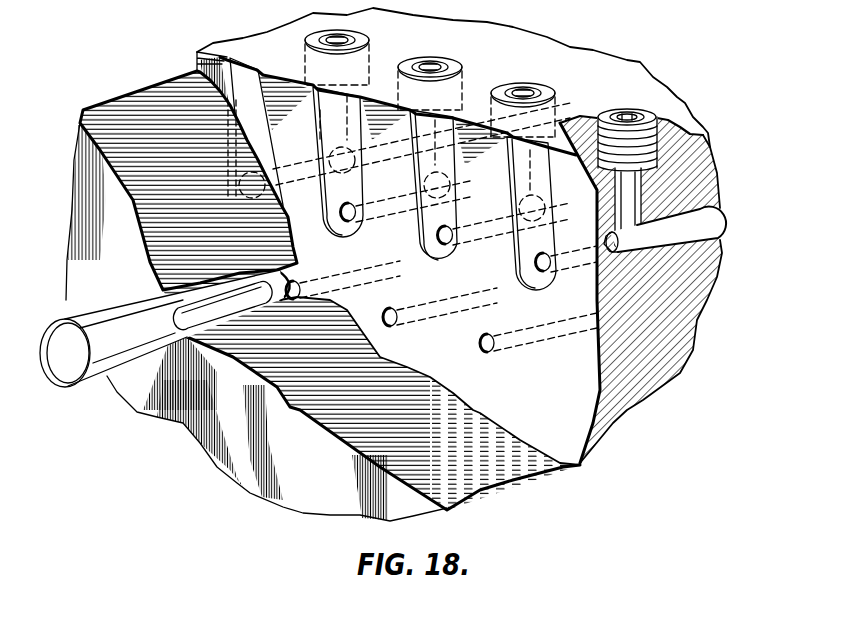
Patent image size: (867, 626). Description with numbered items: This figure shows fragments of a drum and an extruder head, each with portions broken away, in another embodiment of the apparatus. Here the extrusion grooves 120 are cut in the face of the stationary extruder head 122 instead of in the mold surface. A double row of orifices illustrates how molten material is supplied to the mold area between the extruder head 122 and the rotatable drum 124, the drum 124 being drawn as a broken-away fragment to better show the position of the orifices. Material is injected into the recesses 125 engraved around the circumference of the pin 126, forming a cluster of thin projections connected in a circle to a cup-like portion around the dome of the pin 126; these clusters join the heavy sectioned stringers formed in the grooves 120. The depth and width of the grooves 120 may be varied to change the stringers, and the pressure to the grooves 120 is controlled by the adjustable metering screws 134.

The grooves 120 is at (547, 280).
The stationary extruder head 122 is at (660, 367).
The rotatable drum 124 is at (207, 431).
The recesses 125 is at (230, 287).
The pin 126 is at (162, 315).
The adjustable metering screws 134 is at (570, 82).